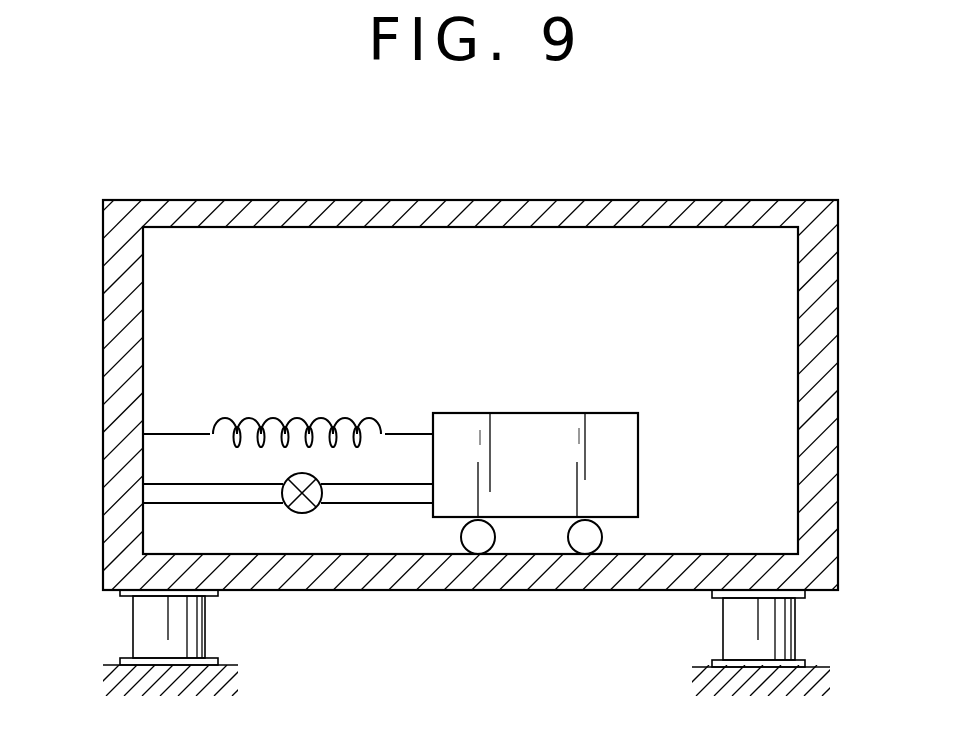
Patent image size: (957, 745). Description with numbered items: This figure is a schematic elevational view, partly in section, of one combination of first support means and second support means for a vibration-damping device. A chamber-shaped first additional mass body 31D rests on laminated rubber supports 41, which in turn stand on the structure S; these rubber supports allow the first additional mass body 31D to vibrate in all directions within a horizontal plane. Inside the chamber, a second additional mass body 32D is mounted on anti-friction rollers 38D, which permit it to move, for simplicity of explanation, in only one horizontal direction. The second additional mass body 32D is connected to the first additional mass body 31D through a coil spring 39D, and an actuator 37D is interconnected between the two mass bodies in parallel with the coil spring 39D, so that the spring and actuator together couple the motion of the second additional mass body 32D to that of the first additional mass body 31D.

The first additional mass body 31D is at (523, 211).
The second additional mass body 32D is at (555, 431).
The actuator 37D is at (312, 510).
The anti-friction rollers 38D is at (603, 536).
The coil spring 39D is at (303, 418).
The laminated rubber supports 41 is at (202, 625).
The structure S is at (108, 663).